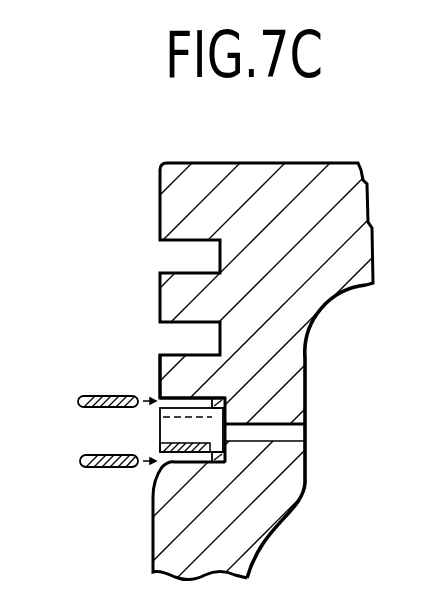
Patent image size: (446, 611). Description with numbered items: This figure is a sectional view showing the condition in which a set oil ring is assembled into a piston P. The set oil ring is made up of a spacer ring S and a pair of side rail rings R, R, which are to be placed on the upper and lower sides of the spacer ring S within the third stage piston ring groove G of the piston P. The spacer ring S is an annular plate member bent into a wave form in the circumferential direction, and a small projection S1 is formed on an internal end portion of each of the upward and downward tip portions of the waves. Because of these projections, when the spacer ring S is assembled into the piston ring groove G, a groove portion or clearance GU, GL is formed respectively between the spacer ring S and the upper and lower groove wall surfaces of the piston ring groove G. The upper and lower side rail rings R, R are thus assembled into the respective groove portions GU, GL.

The piston P is at (177, 203).
The upper groove portion GU is at (165, 401).
The lower groove portion GL is at (173, 462).
The spacer ring S is at (167, 432).
The small projection S1 is at (227, 400).
The piston ring groove G is at (228, 432).
The side rail ring R is at (80, 402).